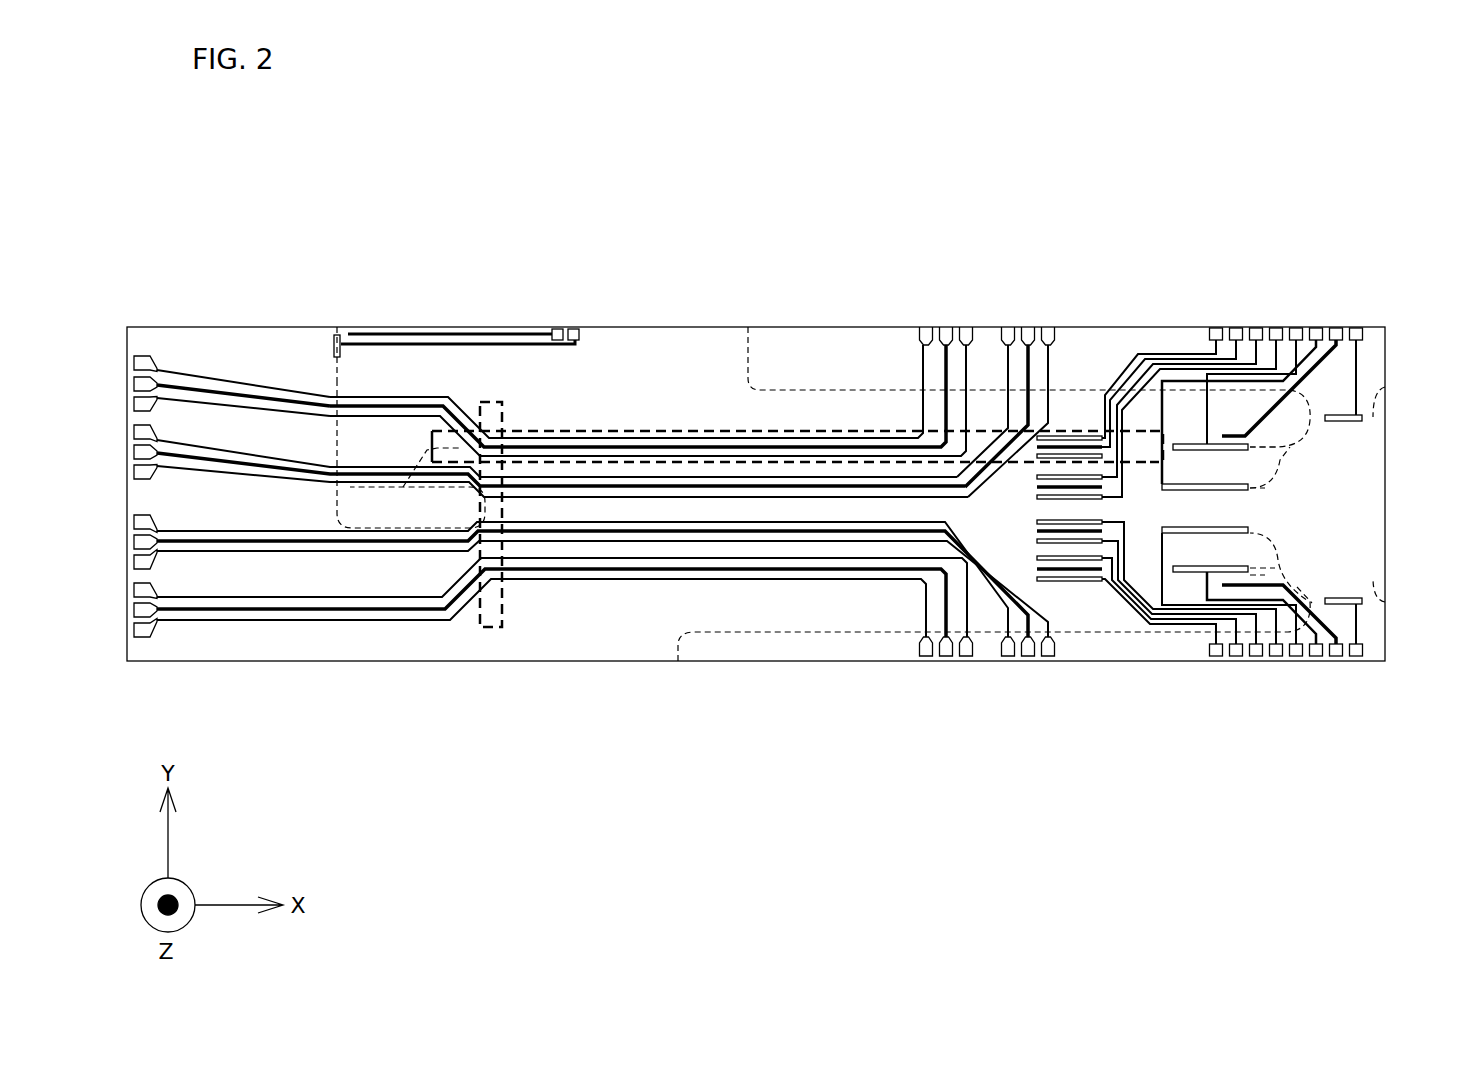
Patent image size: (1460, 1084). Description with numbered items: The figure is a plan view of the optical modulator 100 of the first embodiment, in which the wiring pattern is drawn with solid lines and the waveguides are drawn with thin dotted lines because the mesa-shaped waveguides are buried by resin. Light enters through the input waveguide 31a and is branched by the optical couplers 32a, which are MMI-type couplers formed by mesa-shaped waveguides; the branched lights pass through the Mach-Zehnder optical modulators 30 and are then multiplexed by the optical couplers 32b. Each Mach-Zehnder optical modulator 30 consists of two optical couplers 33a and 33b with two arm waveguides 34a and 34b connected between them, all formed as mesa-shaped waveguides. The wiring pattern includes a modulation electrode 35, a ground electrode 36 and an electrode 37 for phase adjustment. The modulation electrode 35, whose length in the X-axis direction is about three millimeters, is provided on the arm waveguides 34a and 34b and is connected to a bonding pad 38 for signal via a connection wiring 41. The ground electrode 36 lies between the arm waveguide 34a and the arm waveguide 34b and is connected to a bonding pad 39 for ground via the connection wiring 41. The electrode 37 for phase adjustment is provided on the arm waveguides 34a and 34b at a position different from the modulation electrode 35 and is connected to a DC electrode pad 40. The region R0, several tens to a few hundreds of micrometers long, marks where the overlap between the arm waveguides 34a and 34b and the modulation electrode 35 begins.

The optical modulator 100 is at (1380, 242).
The Mach-Zehnder optical modulator 30 is at (764, 430).
The input waveguide 31a is at (337, 378).
The optical coupler 32a is at (337, 440).
The optical coupler 32b is at (1294, 435).
The optical coupler 33a is at (448, 443).
The optical coupler 33b is at (1140, 440).
The arm waveguide 34a is at (893, 432).
The arm waveguide 34b is at (860, 440).
The modulation electrode 35 is at (658, 436).
The ground electrode 36 is at (736, 445).
The electrode for phase adjustment 37 is at (1092, 456).
The bonding pad for signal 38 is at (134, 362).
The bonding pad for ground 39 is at (134, 384).
The DC electrode pad 40 is at (1216, 327).
The connection wiring 41 is at (217, 390).
The region R0 is at (490, 630).